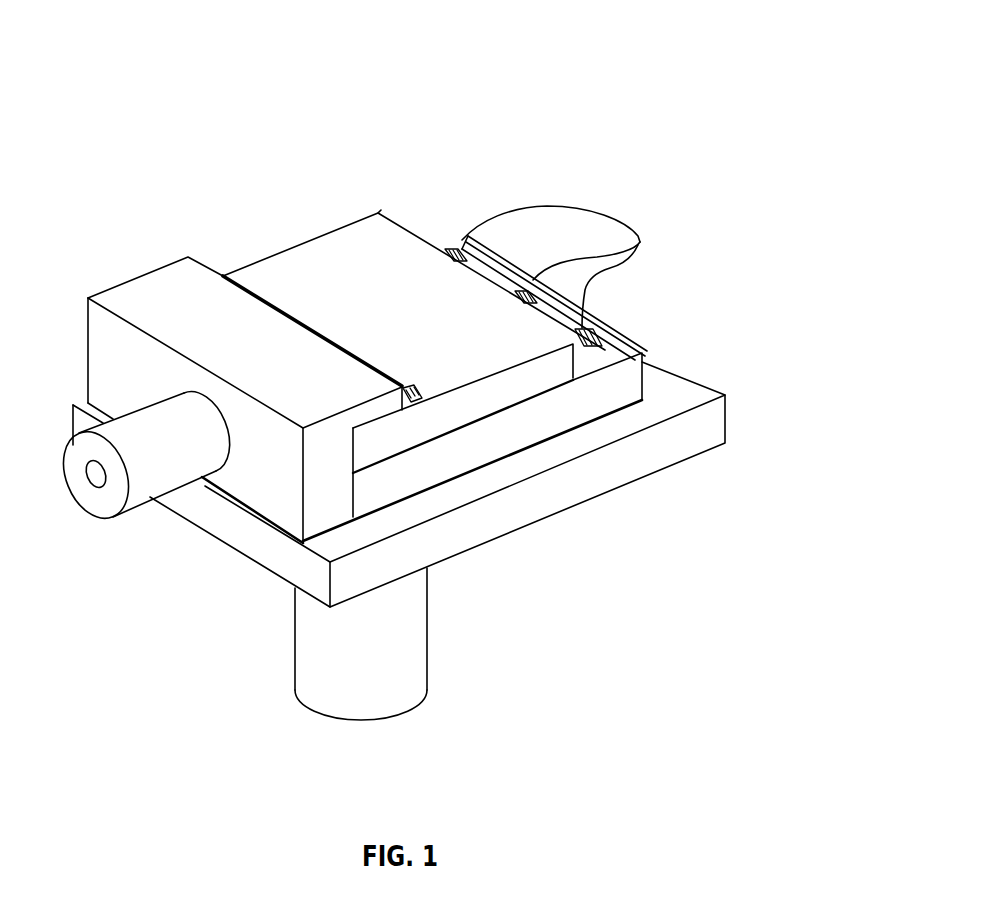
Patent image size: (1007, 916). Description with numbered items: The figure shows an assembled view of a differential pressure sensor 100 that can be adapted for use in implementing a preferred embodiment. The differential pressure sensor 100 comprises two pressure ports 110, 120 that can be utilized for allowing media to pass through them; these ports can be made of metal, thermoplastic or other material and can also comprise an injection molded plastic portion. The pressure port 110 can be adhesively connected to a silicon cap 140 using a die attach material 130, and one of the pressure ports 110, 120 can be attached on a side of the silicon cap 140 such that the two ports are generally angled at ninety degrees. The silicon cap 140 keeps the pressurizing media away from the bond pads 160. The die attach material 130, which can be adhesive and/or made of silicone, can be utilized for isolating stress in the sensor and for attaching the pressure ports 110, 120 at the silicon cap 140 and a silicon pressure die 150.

The differential pressure sensor 100 is at (575, 83).
The pressure port 110 is at (138, 490).
The pressure port 120 is at (418, 676).
The die attach material 130 is at (410, 387).
The silicon cap 140 is at (379, 212).
The silicon pressure die 150 is at (644, 363).
The bond pads 160 is at (573, 283).